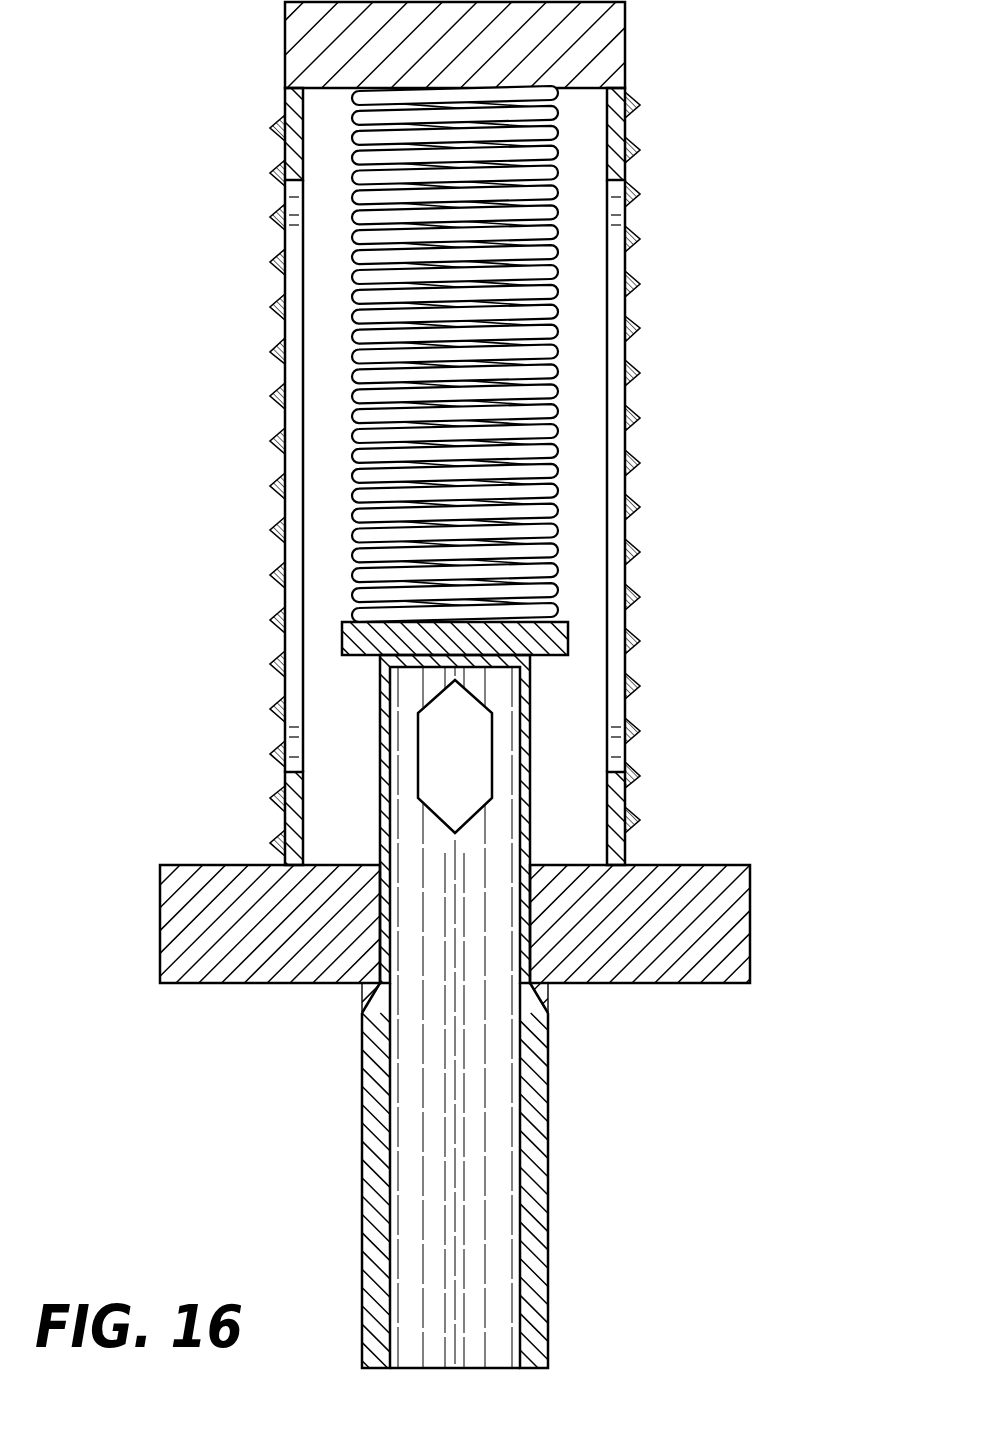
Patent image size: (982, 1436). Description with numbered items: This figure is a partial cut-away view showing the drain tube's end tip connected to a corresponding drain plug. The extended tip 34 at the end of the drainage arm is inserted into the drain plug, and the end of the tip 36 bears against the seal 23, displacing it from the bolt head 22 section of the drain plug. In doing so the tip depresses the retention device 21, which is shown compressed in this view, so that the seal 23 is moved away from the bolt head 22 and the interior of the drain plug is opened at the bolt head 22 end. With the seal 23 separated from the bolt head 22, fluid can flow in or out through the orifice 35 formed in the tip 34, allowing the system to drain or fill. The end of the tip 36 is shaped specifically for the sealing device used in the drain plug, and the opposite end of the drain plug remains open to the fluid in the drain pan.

The retention device 21 is at (537, 397).
The bolt head 22 is at (733, 908).
The seal 23 is at (550, 637).
The extended tip 34 is at (535, 1125).
The orifice 35 is at (475, 750).
The end of the tip 36 is at (528, 659).